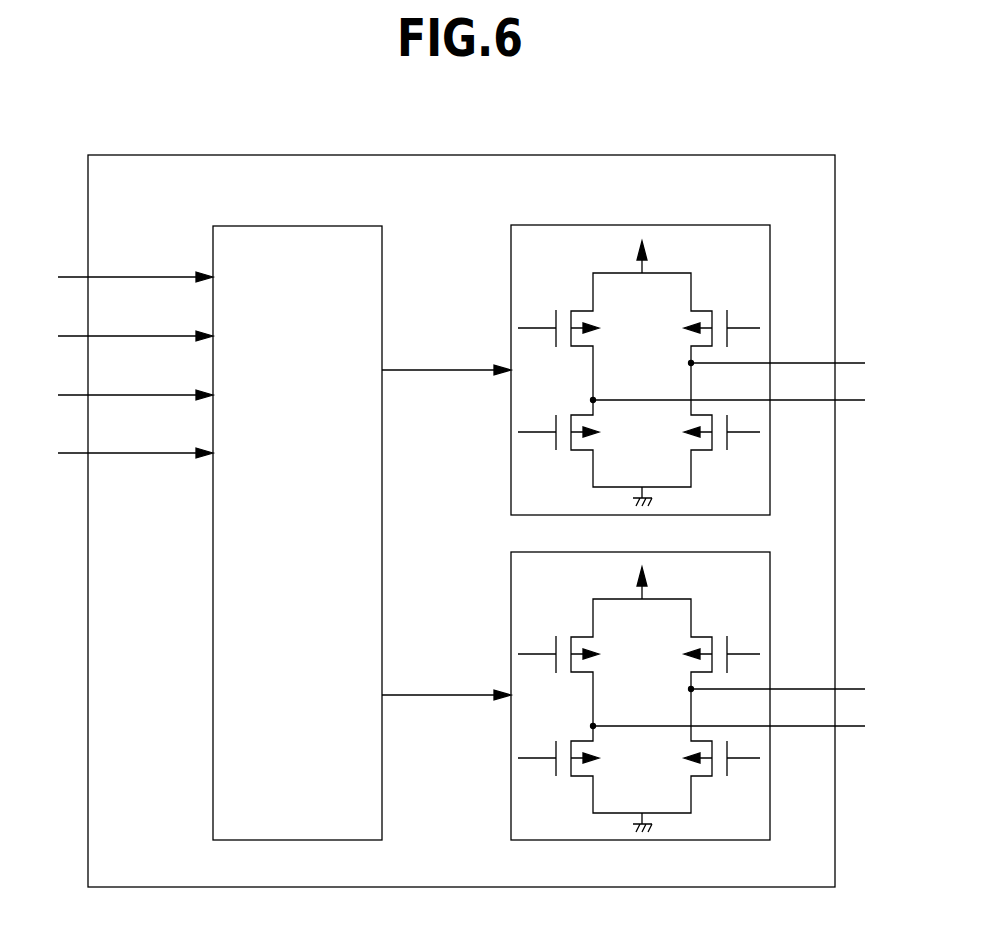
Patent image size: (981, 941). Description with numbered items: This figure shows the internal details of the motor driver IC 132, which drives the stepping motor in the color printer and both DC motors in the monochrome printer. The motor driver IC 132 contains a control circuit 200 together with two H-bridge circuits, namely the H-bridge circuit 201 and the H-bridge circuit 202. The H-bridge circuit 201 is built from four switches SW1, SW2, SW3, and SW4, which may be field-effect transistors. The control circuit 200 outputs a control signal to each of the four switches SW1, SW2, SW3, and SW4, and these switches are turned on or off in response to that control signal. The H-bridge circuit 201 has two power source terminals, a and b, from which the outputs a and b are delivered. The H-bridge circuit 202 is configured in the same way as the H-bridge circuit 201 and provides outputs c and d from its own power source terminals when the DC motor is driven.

The motor driver IC 132 is at (503, 155).
The control circuit 200 is at (295, 226).
The H-bridge circuit 201 is at (698, 344).
The H-bridge circuit 202 is at (511, 592).
The switch SW1 is at (571, 308).
The switch SW2 is at (571, 452).
The switch SW3 is at (712, 308).
The switch SW4 is at (712, 452).